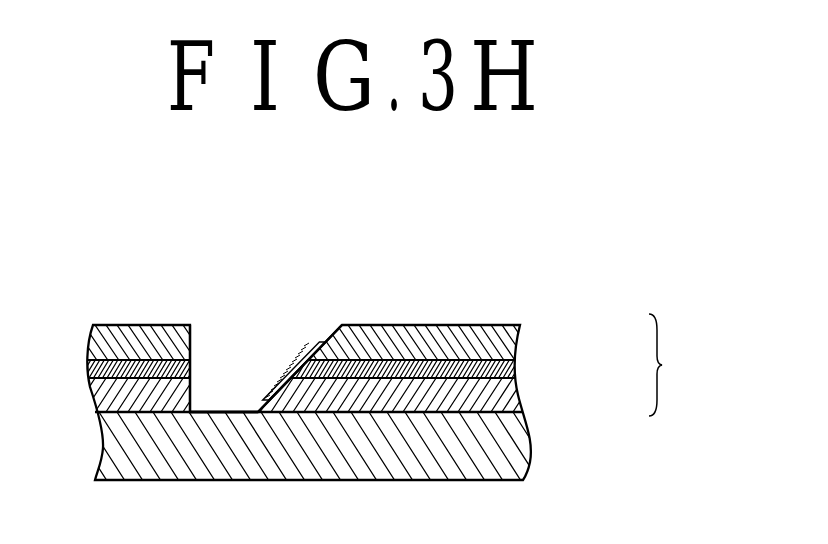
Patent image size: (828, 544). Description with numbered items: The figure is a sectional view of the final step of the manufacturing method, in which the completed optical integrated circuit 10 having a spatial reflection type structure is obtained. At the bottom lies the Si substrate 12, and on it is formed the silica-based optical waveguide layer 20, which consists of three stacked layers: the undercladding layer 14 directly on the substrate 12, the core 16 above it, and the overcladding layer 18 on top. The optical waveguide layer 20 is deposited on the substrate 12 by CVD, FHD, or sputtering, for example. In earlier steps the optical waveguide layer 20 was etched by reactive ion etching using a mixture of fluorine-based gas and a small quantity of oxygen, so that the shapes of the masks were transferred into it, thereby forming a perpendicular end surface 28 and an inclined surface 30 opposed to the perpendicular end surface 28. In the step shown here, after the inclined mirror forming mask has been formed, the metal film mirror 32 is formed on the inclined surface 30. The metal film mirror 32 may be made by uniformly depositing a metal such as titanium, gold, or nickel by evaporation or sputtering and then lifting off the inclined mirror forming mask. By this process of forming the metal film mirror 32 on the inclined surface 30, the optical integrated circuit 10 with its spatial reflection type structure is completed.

The optical integrated circuit 10 is at (392, 323).
The Si substrate 12 is at (513, 445).
The undercladding layer 14 is at (507, 397).
The core 16 is at (515, 368).
The overcladding layer 18 is at (507, 338).
The optical waveguide layer 20 is at (677, 365).
The perpendicular end surface 28 is at (196, 333).
The inclined surface 30 is at (341, 325).
The metal film mirror 32 is at (291, 371).